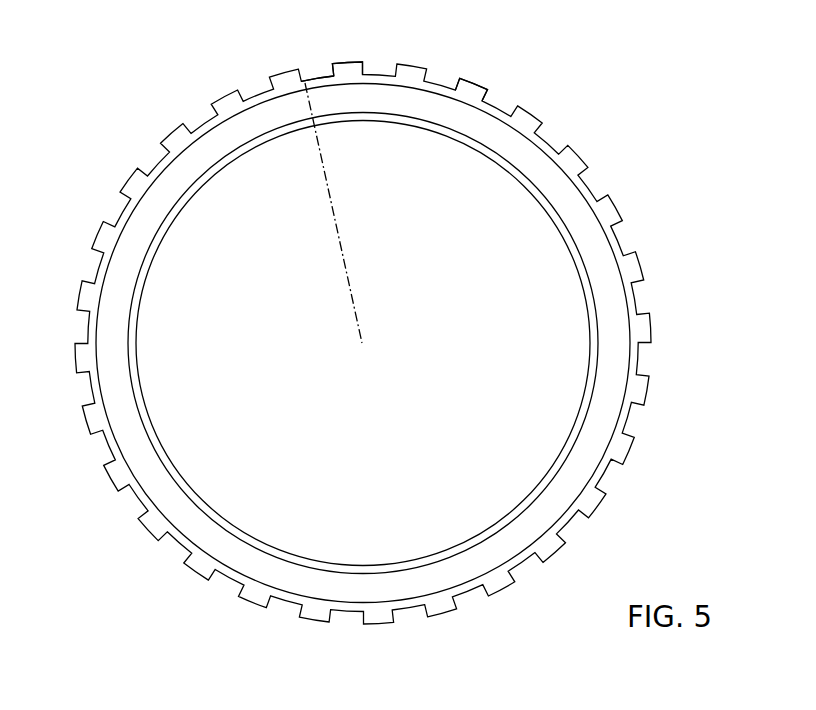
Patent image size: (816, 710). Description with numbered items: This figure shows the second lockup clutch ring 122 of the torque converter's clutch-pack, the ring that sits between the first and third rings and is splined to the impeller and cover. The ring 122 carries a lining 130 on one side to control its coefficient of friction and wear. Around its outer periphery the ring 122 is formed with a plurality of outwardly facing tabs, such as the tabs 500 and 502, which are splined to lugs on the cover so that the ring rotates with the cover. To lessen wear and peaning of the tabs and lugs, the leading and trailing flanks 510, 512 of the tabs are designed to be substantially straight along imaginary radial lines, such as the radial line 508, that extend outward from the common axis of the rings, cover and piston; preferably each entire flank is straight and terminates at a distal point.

The tab 500 is at (347, 62).
The leading flank 510 is at (367, 72).
The tab 502 is at (457, 78).
The trailing flank 512 is at (325, 72).
The imaginary radial line 508 is at (338, 243).
The second ring 122 is at (555, 227).
The lining 130 is at (608, 372).